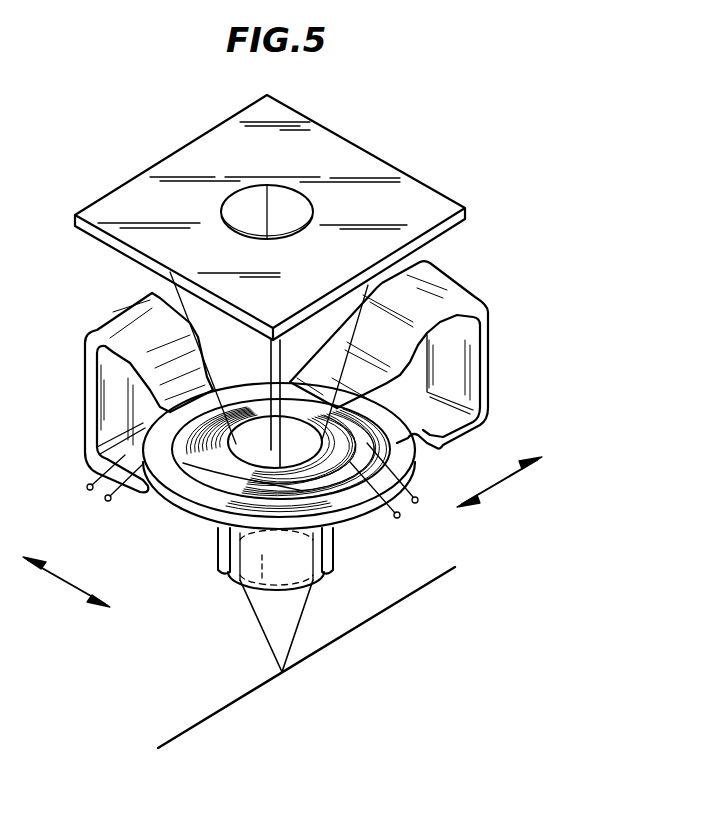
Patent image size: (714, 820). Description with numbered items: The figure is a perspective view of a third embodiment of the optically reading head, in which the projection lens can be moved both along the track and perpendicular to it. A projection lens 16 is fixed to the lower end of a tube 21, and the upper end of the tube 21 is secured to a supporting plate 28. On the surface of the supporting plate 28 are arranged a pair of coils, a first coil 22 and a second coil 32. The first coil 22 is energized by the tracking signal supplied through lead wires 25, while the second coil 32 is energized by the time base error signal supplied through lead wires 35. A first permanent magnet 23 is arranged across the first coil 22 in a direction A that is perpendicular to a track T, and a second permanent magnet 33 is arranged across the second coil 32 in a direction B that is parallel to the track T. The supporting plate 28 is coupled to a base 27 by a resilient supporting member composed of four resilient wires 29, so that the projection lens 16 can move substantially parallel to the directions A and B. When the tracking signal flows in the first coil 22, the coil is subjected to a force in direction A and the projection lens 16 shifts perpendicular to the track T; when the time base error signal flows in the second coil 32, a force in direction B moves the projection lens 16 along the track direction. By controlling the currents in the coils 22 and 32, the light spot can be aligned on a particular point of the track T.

The projection lens 16 is at (247, 563).
The tube 21 is at (333, 542).
The first coil 22 is at (152, 417).
The first permanent magnet 23 is at (85, 333).
The lead wires 25 is at (95, 493).
The base 27 is at (420, 197).
The supporting plate 28 is at (162, 503).
The resilient wires 29 is at (268, 340).
The second coil 32 is at (458, 437).
The second permanent magnet 33 is at (485, 345).
The lead wires 35 is at (407, 510).
The track T is at (372, 617).
The direction A is at (66, 586).
The direction B is at (499, 482).